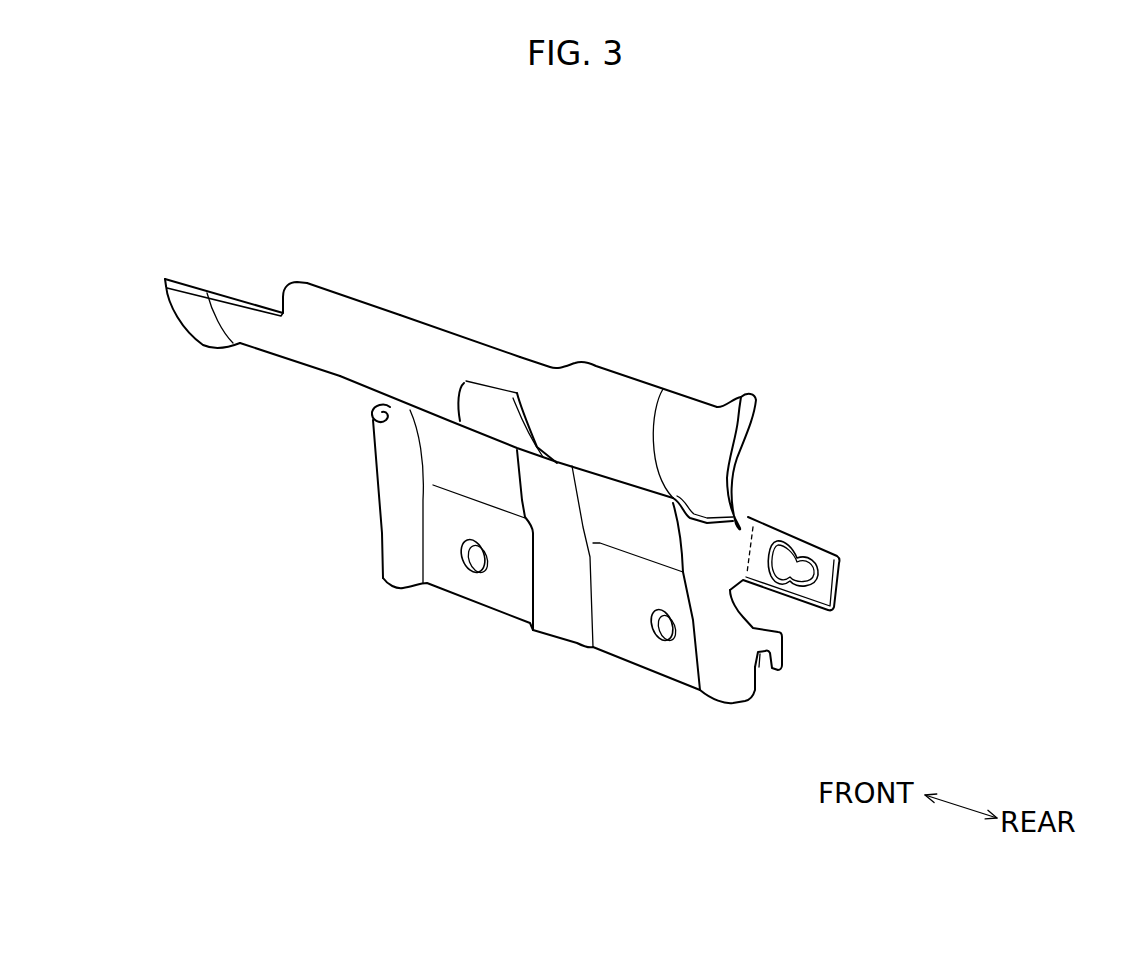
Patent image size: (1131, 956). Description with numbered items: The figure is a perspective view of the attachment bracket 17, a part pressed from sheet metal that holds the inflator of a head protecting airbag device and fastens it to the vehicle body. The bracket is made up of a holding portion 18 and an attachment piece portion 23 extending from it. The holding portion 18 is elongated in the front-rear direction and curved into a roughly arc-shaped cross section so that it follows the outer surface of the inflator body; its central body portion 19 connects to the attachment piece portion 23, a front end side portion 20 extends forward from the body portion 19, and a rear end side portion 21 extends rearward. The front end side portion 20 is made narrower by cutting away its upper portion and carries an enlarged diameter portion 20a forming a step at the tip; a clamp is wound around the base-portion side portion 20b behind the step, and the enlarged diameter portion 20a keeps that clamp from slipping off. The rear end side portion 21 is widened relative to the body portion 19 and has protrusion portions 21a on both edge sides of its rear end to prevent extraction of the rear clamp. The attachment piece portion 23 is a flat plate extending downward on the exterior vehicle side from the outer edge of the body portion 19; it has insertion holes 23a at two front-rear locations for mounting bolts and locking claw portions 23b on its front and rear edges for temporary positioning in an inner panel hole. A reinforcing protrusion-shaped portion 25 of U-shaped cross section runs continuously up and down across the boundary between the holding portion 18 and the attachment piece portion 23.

The attachment bracket 17 is at (847, 280).
The holding portion 18 is at (467, 317).
The body portion 19 is at (502, 372).
The front end side portion 20 is at (245, 293).
The enlarged diameter portion 20a is at (203, 345).
The base-portion side portion 20b is at (265, 340).
The rear end side portion 21 is at (693, 390).
The protrusion portion 21a is at (746, 396).
The attachment piece portion 23 is at (497, 612).
The insertion hole 23a is at (477, 572).
The locking claw portion 23b is at (778, 662).
The protrusion-shaped portion 25 is at (548, 443).